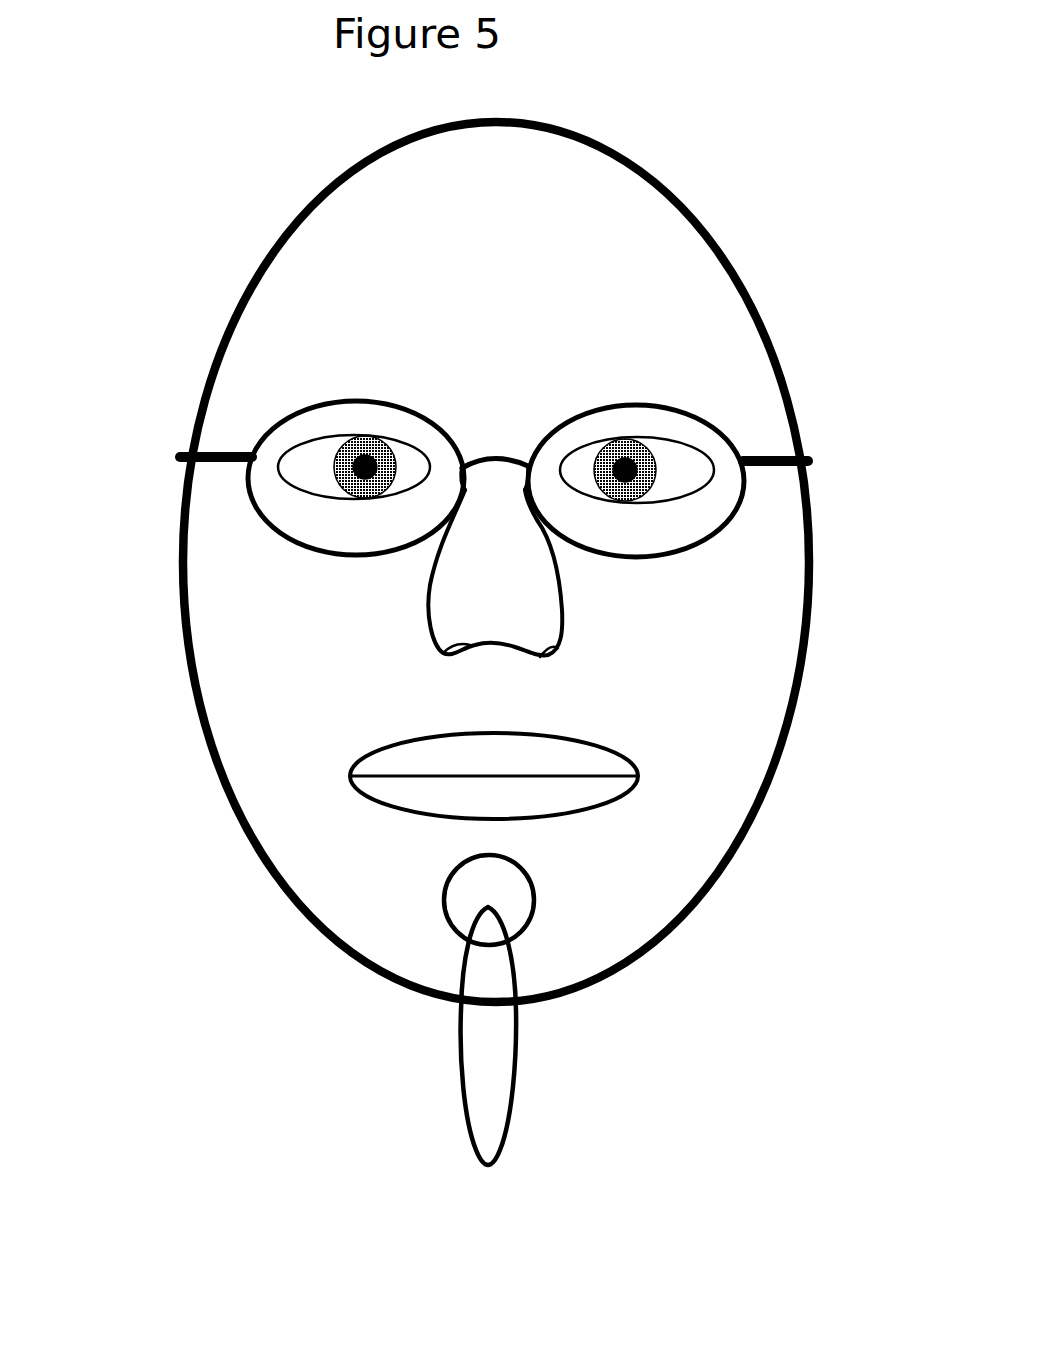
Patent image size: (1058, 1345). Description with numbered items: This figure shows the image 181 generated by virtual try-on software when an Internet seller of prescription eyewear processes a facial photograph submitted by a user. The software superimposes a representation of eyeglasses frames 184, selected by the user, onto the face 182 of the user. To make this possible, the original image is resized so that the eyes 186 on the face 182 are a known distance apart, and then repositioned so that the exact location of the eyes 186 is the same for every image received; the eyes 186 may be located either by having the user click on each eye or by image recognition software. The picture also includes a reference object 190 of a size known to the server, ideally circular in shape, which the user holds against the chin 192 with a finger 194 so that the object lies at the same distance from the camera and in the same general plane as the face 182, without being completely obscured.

The image 181 is at (695, 1055).
The face 182 is at (710, 238).
The eyeglasses frames 184 is at (728, 522).
The eyes 186 is at (298, 450).
The reference object 190 is at (537, 893).
The chin 192 is at (432, 962).
The finger 194 is at (493, 1103).